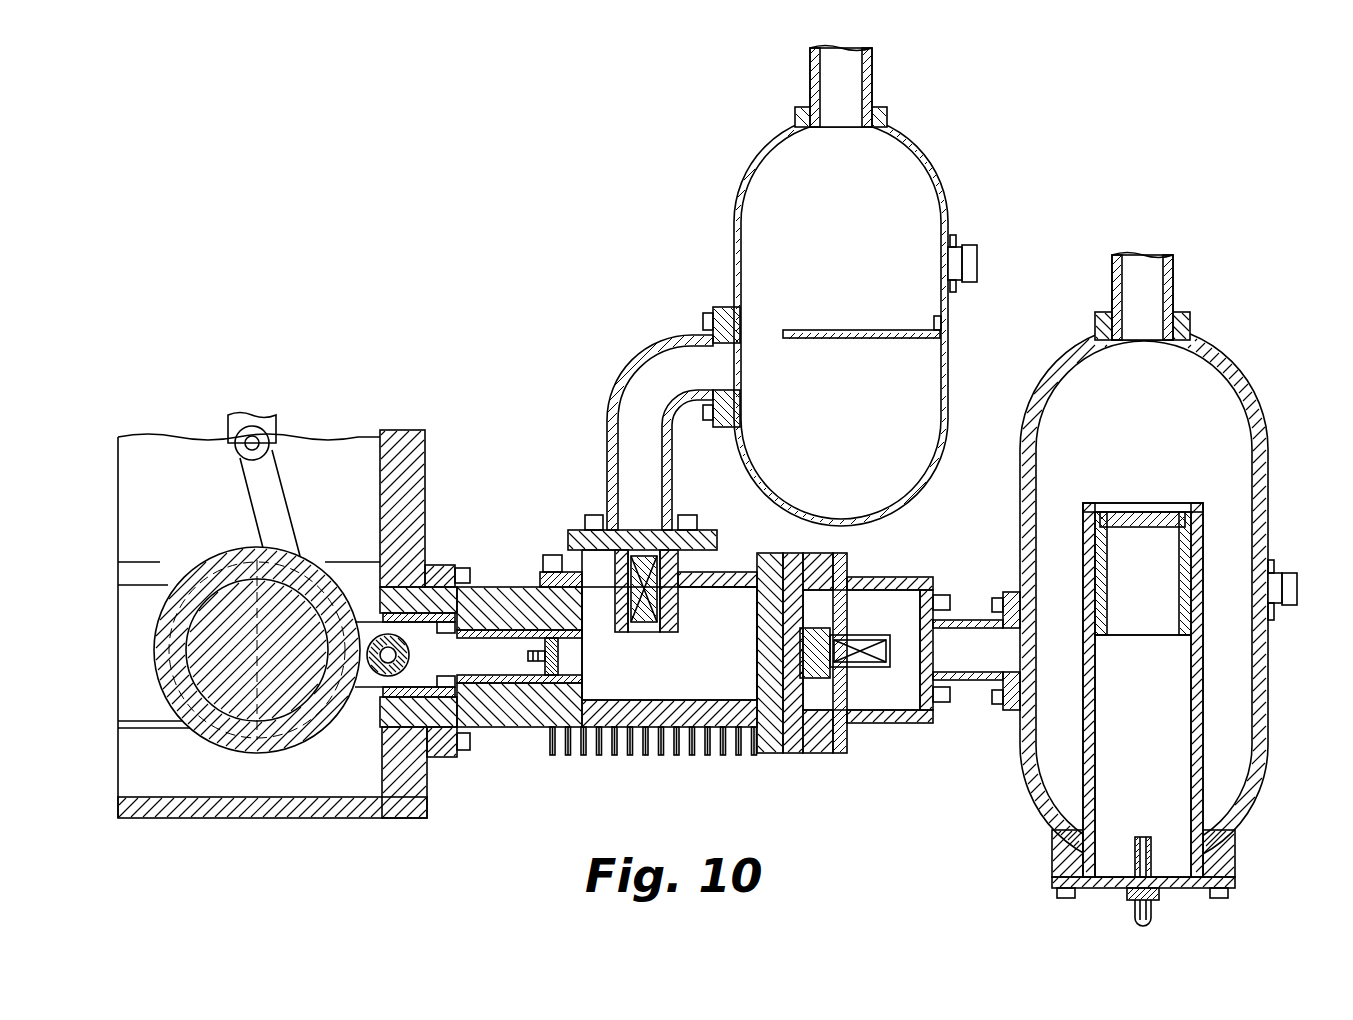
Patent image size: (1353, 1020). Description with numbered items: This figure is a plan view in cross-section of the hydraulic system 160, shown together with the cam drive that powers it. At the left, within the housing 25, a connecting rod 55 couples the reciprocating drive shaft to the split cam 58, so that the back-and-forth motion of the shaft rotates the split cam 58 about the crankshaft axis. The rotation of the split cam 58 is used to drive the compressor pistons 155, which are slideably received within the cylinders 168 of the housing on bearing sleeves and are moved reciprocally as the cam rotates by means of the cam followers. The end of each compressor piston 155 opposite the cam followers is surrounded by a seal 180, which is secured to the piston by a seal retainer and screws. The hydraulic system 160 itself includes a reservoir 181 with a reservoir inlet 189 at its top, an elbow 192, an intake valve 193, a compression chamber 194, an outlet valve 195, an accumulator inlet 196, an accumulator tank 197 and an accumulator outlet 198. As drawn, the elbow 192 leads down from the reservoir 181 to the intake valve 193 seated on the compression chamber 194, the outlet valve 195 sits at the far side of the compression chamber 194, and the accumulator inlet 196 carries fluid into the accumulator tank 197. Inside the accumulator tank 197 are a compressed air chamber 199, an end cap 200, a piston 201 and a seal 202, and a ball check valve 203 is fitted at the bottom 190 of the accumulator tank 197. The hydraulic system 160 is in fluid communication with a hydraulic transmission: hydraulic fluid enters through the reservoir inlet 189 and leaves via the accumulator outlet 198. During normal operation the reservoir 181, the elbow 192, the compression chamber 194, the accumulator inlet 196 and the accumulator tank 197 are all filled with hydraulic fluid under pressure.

The crankcase housing 25 is at (428, 460).
The connecting rod 55 is at (262, 483).
The split cam 58 is at (150, 655).
The compressor piston 155 is at (495, 645).
The seal 180 is at (548, 676).
The hydraulic system 160 is at (785, 653).
The compression chamber 194 is at (668, 680).
The cylinder 168 is at (584, 663).
The intake valve 193 is at (643, 550).
The outlet valve 195 is at (800, 650).
The accumulator inlet 196 is at (967, 660).
The elbow 192 is at (626, 372).
The upper vessel 181 is at (950, 185).
The reservoir inlet 189 is at (872, 82).
The accumulator tank 197 is at (1245, 730).
The vessel base 190 is at (1026, 800).
The piston 201 is at (1190, 573).
The seal 202 is at (1193, 600).
The end cap 200 is at (1180, 507).
The compressed air chamber 199 is at (1175, 765).
The ball check valve 203 is at (1160, 895).
The accumulator outlet 198 is at (1176, 279).